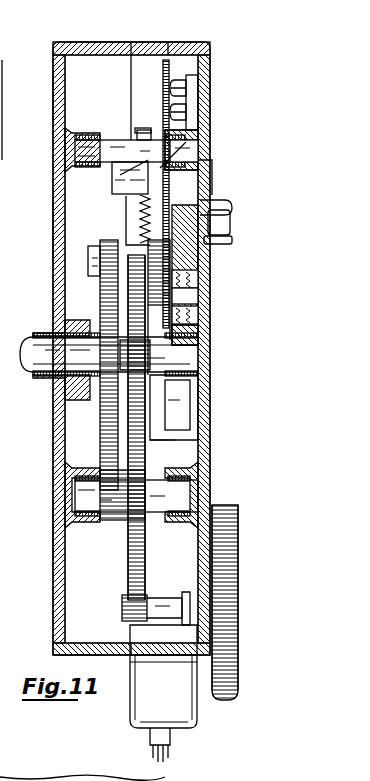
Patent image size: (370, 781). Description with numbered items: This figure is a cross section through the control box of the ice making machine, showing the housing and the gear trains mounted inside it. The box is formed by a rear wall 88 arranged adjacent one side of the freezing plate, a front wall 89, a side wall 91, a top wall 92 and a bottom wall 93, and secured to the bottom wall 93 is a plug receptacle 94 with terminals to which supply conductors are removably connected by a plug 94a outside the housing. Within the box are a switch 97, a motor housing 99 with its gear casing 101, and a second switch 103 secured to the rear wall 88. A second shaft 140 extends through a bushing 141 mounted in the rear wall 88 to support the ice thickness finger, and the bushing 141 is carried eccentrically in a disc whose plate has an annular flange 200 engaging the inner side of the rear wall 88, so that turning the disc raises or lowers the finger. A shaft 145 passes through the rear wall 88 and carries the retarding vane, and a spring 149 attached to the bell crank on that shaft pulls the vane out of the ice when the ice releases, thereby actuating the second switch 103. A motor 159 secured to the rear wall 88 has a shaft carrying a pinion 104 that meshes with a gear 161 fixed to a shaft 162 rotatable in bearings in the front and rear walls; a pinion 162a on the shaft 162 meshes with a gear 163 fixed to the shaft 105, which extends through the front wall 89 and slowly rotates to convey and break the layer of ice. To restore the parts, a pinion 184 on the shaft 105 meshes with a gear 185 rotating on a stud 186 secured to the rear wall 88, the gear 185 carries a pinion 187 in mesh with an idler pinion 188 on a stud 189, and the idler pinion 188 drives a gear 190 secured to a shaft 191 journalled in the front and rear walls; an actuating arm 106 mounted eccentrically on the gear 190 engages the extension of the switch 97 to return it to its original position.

The rear wall 88 is at (210, 80).
The front wall 89 is at (53, 75).
The side wall 91 is at (2, 223).
The top wall 92 is at (88, 42).
The bottom wall 93 is at (72, 655).
The plug receptacle 94 is at (130, 631).
The plug 94a is at (192, 722).
The switch 97 is at (202, 140).
The motor housing 99 is at (88, 252).
The gear casing 101 is at (118, 190).
The second switch 103 is at (176, 406).
The pinion 104 is at (124, 604).
The shaft 105 is at (33, 375).
The actuating arm 106 is at (143, 128).
The second shaft 140 is at (222, 203).
The bushing 141 is at (212, 178).
The shaft 145 is at (248, 230).
The spring 149 is at (135, 225).
The motor 159 is at (222, 698).
The gear 161 is at (145, 540).
The shaft 162 is at (190, 496).
The pinion 162a is at (108, 522).
The gear 163 is at (100, 425).
The pinion 184 is at (200, 384).
The gear 185 is at (200, 338).
The stud 186 is at (195, 315).
The pinion 187 is at (200, 300).
The idler pinion 188 is at (200, 282).
The stud 189 is at (100, 283).
The gear 190 is at (168, 62).
The shaft 191 is at (115, 140).
The annular flange 200 is at (170, 162).